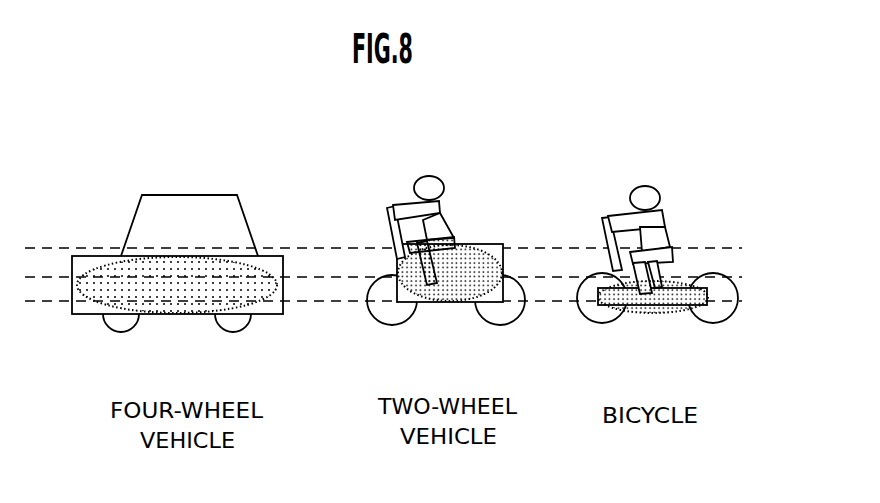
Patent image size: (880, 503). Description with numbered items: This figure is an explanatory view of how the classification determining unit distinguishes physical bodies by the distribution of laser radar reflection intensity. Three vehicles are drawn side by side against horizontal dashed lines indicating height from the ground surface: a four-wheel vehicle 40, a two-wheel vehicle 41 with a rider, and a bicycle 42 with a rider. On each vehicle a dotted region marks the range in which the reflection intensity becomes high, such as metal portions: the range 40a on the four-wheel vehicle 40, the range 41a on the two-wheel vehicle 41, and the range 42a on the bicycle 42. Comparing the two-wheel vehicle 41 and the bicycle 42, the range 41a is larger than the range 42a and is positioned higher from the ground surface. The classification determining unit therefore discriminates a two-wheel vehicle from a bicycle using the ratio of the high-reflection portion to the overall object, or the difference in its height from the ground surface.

The four-wheel vehicle 40 is at (190, 210).
The high reflection intensity range of the four-wheel vehicle 40a is at (176, 316).
The two-wheel vehicle 41 is at (474, 215).
The range of high reflection intensity of the two-wheel vehicle 41a is at (447, 303).
The bicycle 42 is at (692, 214).
The range of high reflection intensity of the bicycle 42a is at (655, 313).